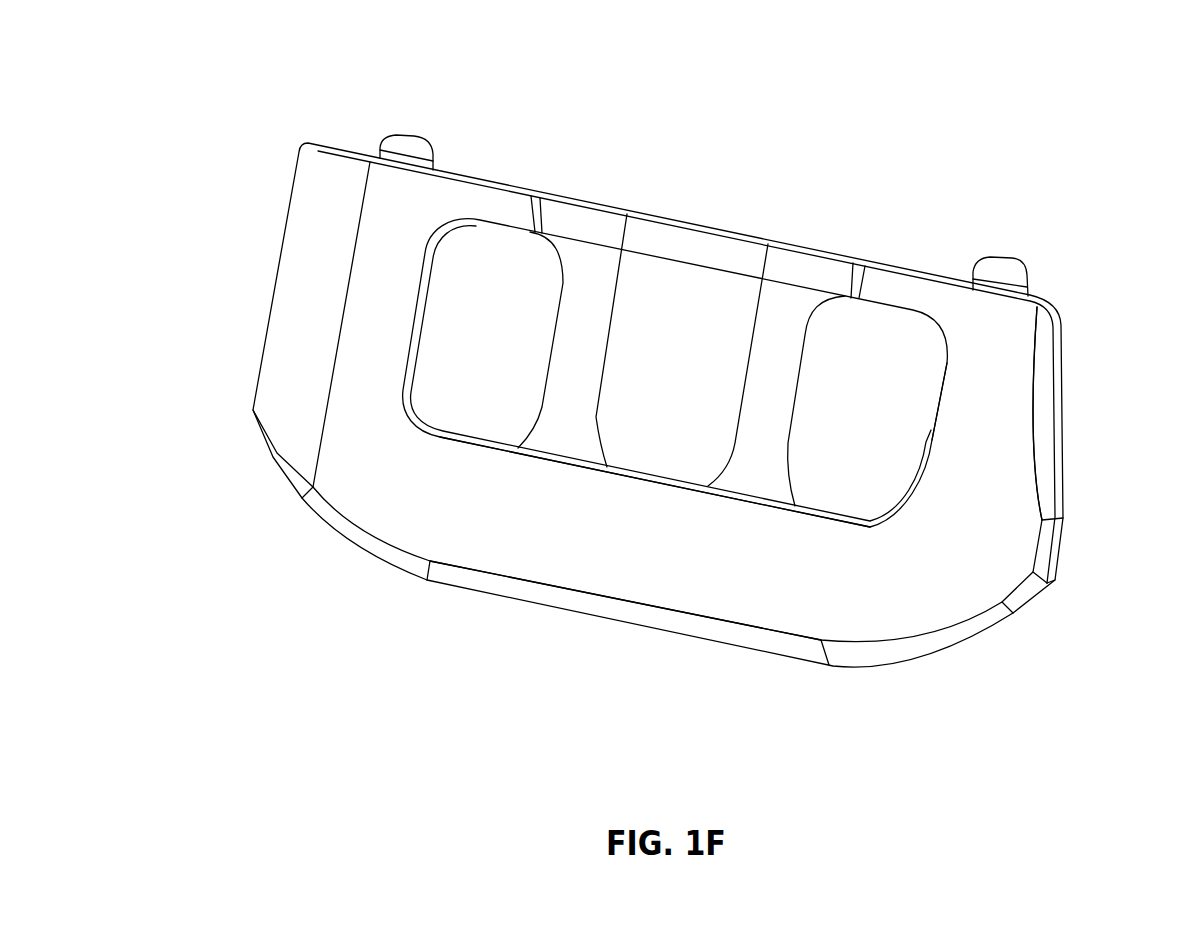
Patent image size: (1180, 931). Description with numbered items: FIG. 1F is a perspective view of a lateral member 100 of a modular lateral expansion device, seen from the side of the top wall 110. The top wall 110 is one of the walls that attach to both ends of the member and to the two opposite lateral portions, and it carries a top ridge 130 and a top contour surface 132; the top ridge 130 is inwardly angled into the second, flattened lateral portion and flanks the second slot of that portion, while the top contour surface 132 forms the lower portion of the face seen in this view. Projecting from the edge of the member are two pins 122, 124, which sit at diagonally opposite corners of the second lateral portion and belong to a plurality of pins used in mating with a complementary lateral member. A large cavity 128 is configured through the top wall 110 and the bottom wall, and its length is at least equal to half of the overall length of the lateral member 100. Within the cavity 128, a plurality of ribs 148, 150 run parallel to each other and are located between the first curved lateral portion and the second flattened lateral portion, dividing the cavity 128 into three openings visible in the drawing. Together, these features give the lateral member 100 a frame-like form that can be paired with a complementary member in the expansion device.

The lateral member 100 is at (298, 650).
The top wall 110 is at (818, 640).
The pin 122 is at (1003, 258).
The pin 124 is at (411, 136).
The cavity 128 is at (943, 380).
The top ridge 130 is at (707, 257).
The top contour surface 132 is at (620, 543).
The rib 148 is at (588, 293).
The rib 150 is at (780, 337).